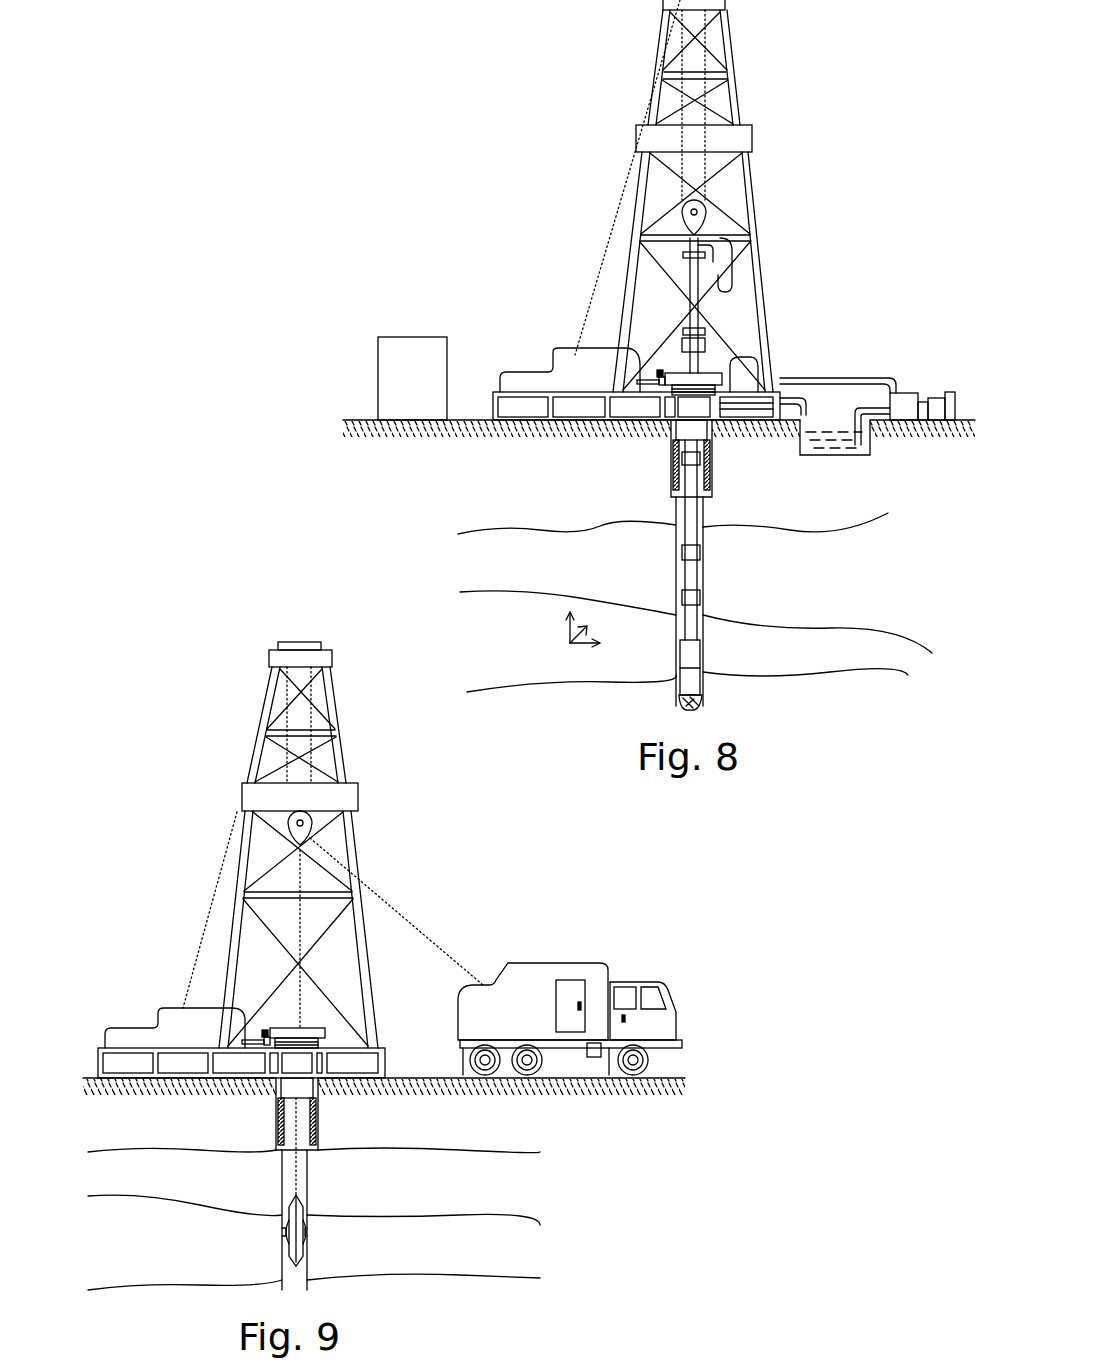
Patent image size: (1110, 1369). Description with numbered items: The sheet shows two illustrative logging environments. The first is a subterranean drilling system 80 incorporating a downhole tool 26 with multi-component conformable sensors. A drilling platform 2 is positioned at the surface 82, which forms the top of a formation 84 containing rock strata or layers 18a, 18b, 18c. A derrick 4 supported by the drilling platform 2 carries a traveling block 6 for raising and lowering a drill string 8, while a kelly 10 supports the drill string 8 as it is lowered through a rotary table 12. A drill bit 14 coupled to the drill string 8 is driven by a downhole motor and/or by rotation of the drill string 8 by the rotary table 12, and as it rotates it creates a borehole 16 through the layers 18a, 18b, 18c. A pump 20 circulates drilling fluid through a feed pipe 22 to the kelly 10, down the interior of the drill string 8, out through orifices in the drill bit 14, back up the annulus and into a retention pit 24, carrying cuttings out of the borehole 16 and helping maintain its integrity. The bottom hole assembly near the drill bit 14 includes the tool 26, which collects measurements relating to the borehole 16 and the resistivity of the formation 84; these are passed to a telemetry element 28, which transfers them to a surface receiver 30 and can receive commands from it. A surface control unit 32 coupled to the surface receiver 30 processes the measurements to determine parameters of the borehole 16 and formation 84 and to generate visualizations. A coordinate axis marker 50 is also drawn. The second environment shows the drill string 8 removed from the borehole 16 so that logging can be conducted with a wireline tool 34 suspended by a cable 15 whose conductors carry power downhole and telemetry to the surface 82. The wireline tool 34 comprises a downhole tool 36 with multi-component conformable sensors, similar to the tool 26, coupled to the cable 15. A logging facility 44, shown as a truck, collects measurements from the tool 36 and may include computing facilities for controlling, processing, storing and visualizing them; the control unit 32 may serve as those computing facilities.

In FIG. 8, the drilling platform 2 is at (493, 402).
In FIG. 9, the drilling platform 2 is at (390, 1062).
In FIG. 8, the derrick 4 is at (734, 98).
In FIG. 9, the derrick 4 is at (368, 952).
In FIG. 8, the traveling block 6 is at (700, 212).
In FIG. 9, the traveling block 6 is at (306, 823).
In FIG. 8, the drill string 8 is at (692, 520).
In FIG. 8, the kelly 10 is at (695, 270).
In FIG. 8, the rotary table 12 is at (718, 375).
In FIG. 9, the rotary table 12 is at (312, 1026).
In FIG. 8, the drill bit 14 is at (705, 703).
In FIG. 9, the cable 15 is at (295, 1122).
In FIG. 8, the borehole 16 is at (705, 540).
In FIG. 9, the borehole 16 is at (300, 1172).
In FIG. 8, the rock stratum 18a is at (495, 632).
In FIG. 8, the rock stratum 18b is at (696, 598).
In FIG. 9, the rock stratum 18b is at (125, 1182).
In FIG. 8, the rock stratum 18c is at (866, 507).
In FIG. 9, the rock stratum 18c is at (125, 1267).
In FIG. 8, the pump 20 is at (905, 394).
In FIG. 8, the feed pipe 22 is at (835, 381).
In FIG. 8, the retention pit 24 is at (845, 440).
In FIG. 8, the downhole tool 26 is at (688, 670).
In FIG. 8, the telemetry element 28 is at (697, 648).
In FIG. 8, the surface receiver 30 is at (698, 330).
In FIG. 8, the surface control unit 32 is at (424, 390).
In FIG. 9, the wireline tool 34 is at (289, 1212).
In FIG. 9, the downhole tool 36 is at (286, 1236).
In FIG. 9, the logging facility 44 is at (545, 963).
In FIG. 8, the coordinate axes 50 is at (562, 636).
In FIG. 8, the subterranean drilling system 80 is at (853, 156).
In FIG. 8, the surface 82 is at (360, 420).
In FIG. 9, the surface 82 is at (90, 1078).
In FIG. 8, the formation 84 is at (406, 501).
In FIG. 9, the formation 84 is at (636, 1168).